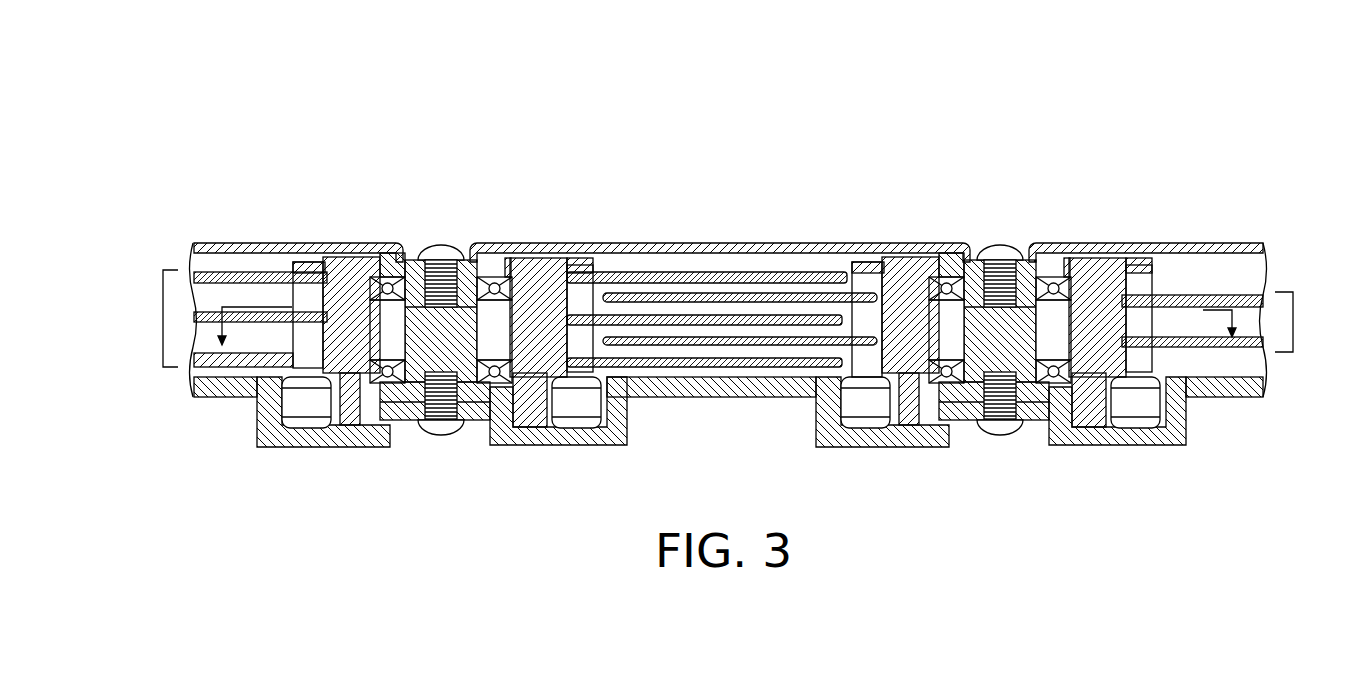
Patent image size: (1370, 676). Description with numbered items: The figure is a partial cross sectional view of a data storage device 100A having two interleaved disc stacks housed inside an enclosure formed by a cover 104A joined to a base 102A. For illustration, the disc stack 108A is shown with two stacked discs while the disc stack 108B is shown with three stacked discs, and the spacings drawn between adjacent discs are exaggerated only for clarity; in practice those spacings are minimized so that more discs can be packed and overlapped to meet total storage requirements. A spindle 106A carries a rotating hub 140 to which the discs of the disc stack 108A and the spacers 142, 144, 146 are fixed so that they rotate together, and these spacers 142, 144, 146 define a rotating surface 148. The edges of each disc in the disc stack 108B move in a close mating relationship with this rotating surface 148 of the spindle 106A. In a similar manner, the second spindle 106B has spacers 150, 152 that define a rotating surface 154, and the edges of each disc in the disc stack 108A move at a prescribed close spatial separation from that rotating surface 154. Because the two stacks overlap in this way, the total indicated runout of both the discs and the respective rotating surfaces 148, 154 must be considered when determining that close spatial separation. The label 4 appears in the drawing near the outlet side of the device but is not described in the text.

The data storage device 100A is at (658, 84).
The base 102A is at (600, 447).
The cover 104A is at (553, 257).
The spindle 106A is at (1001, 237).
The spindle 106B is at (437, 238).
The disc stack 108A is at (1293, 322).
The disc stack 108B is at (163, 318).
The rotating hub 140 is at (896, 268).
The spacer 142 is at (1136, 282).
The spacer 144 is at (1132, 330).
The spacer 146 is at (1150, 343).
The rotating surface 148 is at (833, 330).
The spacer 150 is at (308, 293).
The spacer 152 is at (308, 337).
The rotating surface 154 is at (601, 337).
The flow direction 4 is at (1221, 338).